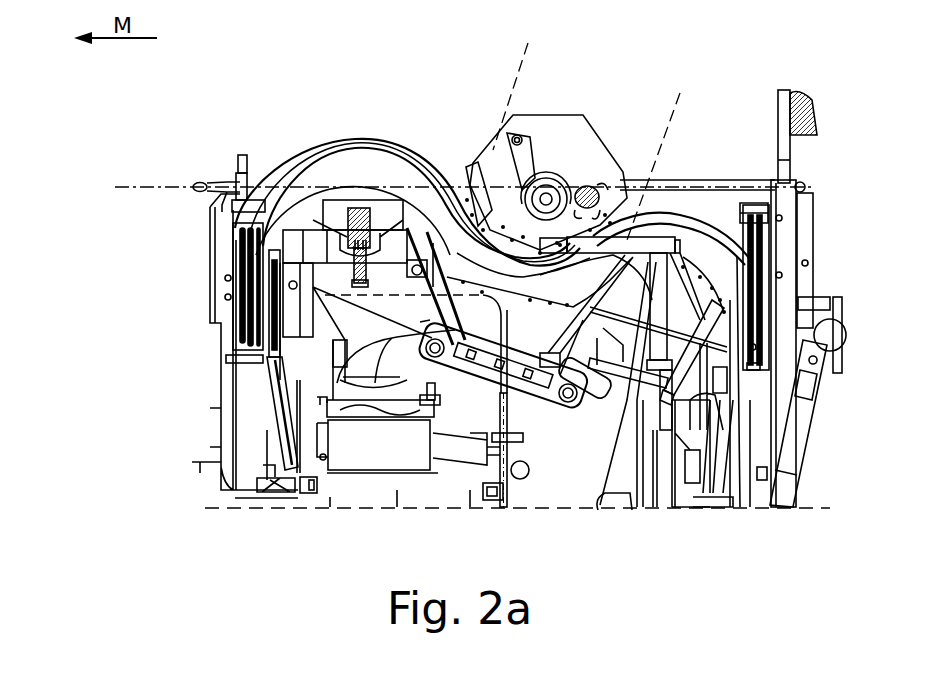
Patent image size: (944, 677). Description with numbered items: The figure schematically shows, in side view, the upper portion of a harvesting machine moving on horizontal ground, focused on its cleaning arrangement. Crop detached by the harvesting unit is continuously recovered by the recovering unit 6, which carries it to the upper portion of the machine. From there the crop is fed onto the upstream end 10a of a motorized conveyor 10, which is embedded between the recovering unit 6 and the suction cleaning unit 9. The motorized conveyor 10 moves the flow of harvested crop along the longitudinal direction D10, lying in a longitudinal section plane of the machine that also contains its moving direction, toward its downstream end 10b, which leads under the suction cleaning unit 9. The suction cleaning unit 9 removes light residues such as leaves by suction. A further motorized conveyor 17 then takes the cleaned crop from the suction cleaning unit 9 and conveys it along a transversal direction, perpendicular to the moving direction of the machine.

The suction cleaning unit 9 is at (326, 222).
The recovering unit 6 is at (698, 240).
The longitudinal direction D10 is at (670, 117).
The motorized conveyor 10 is at (570, 396).
The upstream end 10a is at (592, 393).
The downstream end 10b is at (412, 325).
The motorized conveyor 17 is at (322, 400).